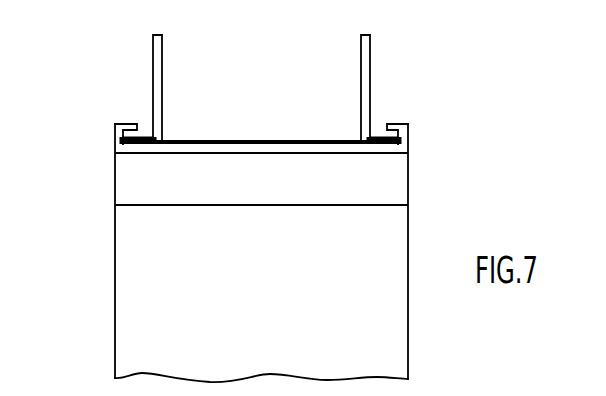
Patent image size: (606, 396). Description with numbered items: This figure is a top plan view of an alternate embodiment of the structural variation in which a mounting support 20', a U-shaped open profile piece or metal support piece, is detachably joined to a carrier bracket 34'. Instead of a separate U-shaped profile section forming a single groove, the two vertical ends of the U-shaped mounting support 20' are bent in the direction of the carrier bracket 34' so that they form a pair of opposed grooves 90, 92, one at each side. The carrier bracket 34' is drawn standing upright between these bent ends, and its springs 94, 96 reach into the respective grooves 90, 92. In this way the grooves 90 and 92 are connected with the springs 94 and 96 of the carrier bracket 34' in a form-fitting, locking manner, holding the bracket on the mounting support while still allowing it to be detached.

The mounting support 20' is at (261, 253).
The carrier bracket 34' is at (260, 88).
The groove 90 is at (115, 131).
The groove 92 is at (407, 133).
The spring 94 is at (148, 144).
The spring 96 is at (382, 144).